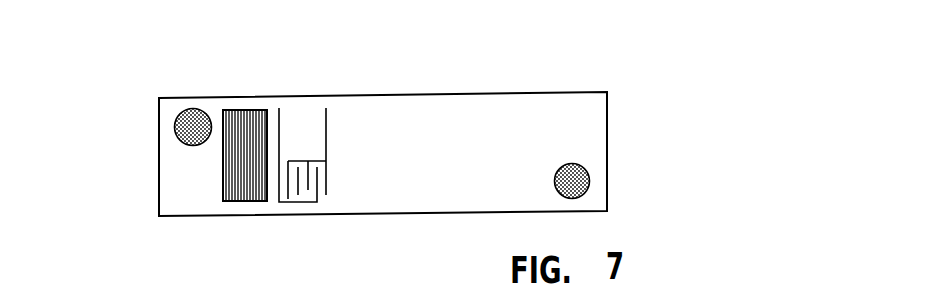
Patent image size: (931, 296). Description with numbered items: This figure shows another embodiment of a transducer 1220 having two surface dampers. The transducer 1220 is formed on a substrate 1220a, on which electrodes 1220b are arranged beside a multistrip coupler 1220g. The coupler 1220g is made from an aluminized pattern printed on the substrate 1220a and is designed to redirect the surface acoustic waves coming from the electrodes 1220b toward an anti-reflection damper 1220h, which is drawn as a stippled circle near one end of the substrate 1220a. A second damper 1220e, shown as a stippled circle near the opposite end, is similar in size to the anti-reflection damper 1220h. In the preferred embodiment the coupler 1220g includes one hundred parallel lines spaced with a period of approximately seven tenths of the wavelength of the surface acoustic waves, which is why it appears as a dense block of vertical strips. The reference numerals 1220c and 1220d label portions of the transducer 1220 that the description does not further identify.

The transducer 1220 is at (383, 127).
The substrate 1220a is at (575, 122).
The electrodes 1220b is at (303, 208).
The card edge 1220c is at (605, 150).
The card edge 1220d is at (158, 177).
The damper 1220e is at (577, 183).
The multistrip coupler 1220g is at (240, 199).
The anti-reflection damper 1220h is at (124, 116).